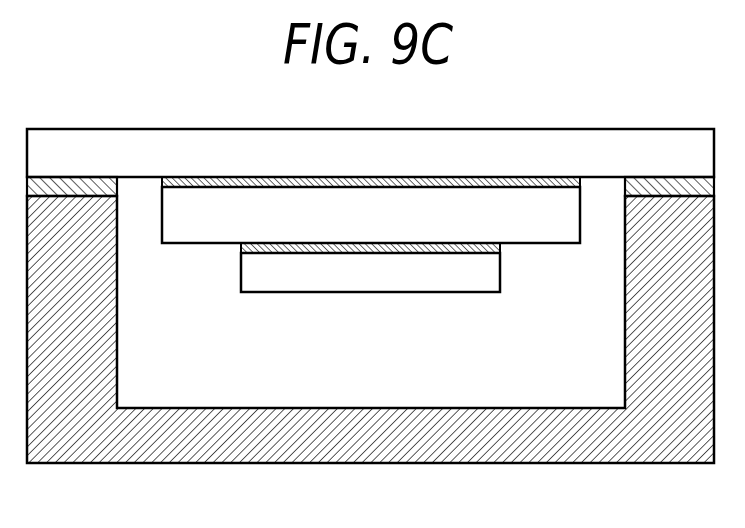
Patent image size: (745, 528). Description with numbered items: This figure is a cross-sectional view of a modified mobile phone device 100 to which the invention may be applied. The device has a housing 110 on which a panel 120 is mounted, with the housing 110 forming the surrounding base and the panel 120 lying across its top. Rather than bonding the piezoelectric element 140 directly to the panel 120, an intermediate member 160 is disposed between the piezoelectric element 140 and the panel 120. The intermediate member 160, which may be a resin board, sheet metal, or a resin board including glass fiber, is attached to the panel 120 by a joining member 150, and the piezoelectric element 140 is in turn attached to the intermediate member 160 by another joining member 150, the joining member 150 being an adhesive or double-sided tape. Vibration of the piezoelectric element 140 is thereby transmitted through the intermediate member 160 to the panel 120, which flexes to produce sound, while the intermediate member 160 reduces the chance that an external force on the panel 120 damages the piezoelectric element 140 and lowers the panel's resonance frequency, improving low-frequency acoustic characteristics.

The mobile phone device 100 is at (524, 87).
The housing 110 is at (312, 445).
The panel 120 is at (593, 148).
The piezoelectric element 140 is at (367, 273).
The joining member 150 is at (73, 187).
The intermediate member 160 is at (443, 212).